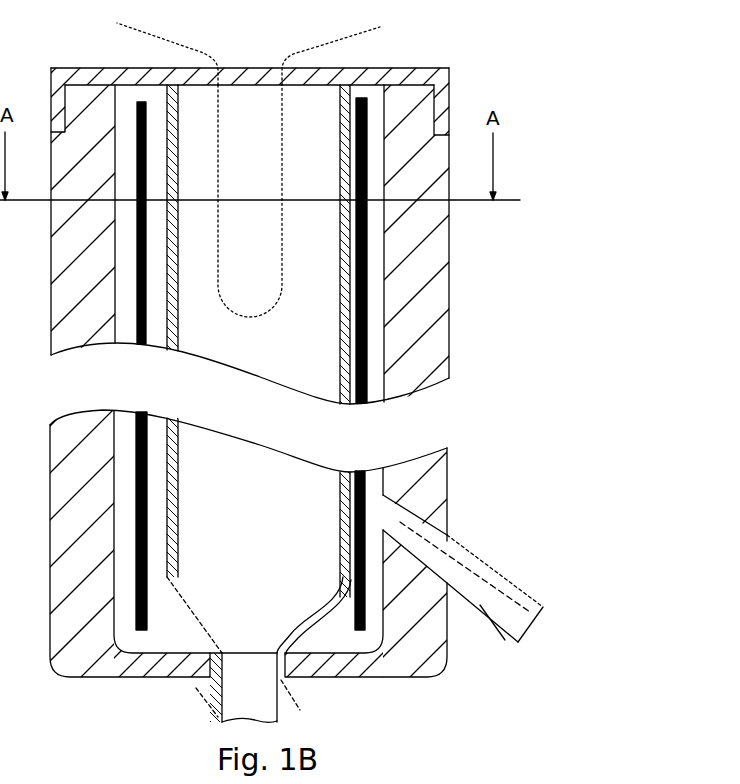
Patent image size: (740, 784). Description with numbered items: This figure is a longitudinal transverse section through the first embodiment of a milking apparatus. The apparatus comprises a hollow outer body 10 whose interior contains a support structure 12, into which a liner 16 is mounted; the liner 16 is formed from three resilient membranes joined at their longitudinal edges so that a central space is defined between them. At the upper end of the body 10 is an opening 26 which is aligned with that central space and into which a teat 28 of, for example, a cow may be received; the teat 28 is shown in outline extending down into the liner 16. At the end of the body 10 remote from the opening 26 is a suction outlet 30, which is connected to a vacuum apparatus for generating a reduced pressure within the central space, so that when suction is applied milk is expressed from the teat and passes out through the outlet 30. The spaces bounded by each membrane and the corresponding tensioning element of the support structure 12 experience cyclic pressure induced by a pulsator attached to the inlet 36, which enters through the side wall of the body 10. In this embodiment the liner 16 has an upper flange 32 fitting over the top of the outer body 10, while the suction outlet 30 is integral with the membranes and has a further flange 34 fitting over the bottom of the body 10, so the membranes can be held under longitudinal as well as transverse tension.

The outer body 10 is at (435, 300).
The support structure 12 is at (354, 614).
The liner 16 is at (340, 510).
The opening 26 is at (255, 71).
The teat 28 is at (264, 320).
The suction outlet 30 is at (263, 690).
The upper flange 32 is at (443, 110).
The further flange 34 is at (197, 692).
The inlet 36 is at (505, 597).